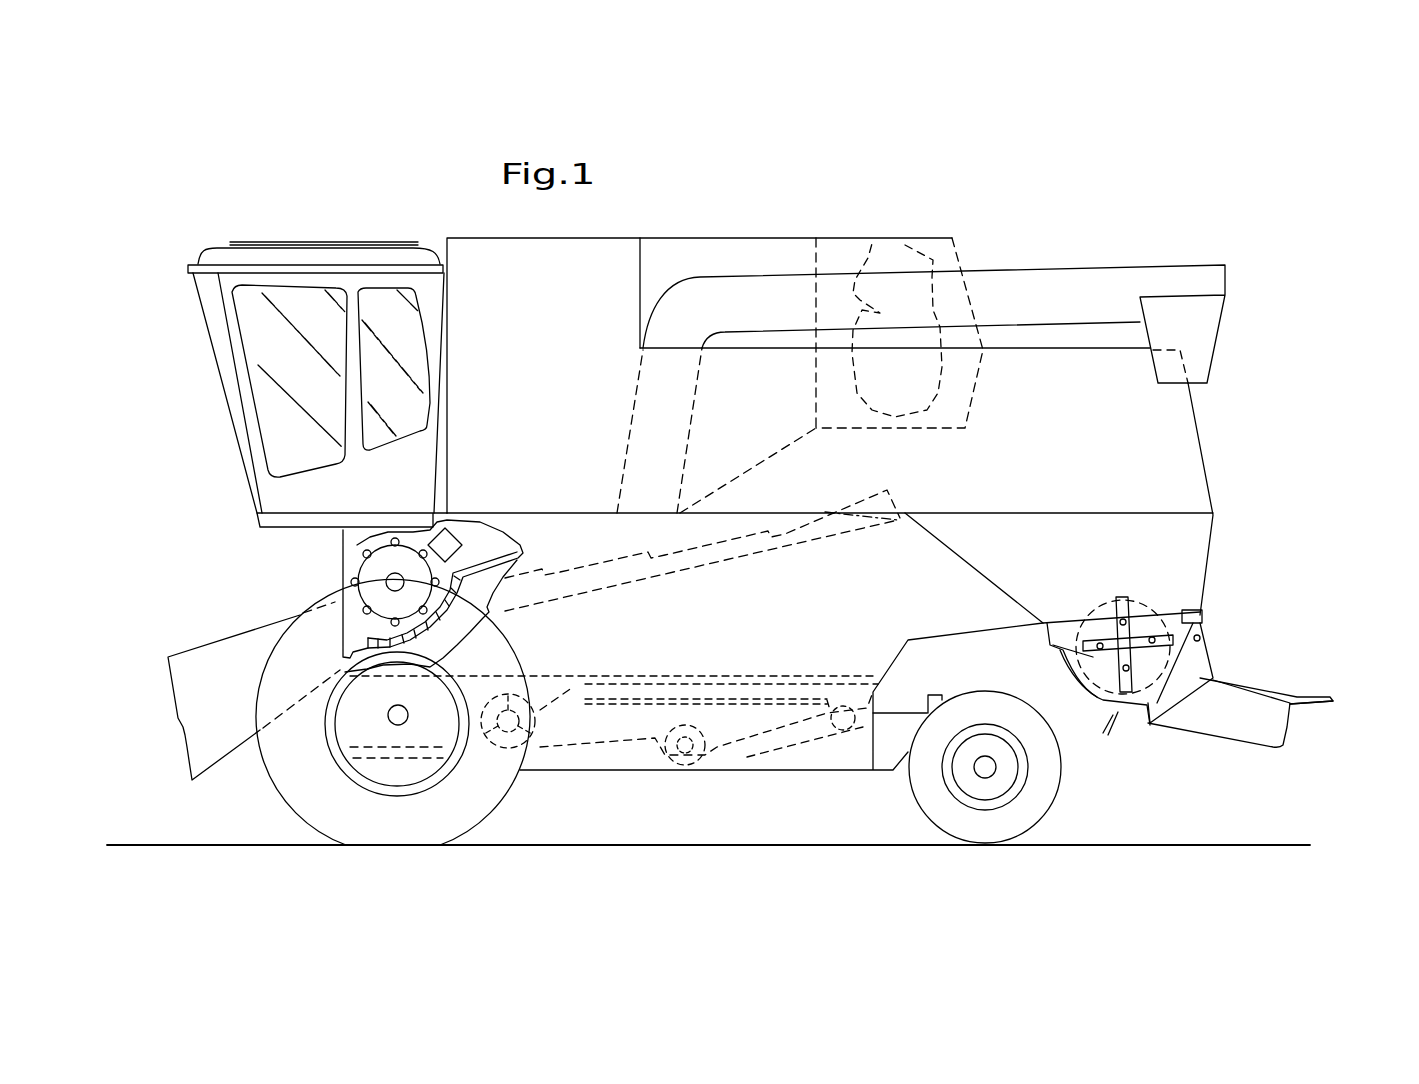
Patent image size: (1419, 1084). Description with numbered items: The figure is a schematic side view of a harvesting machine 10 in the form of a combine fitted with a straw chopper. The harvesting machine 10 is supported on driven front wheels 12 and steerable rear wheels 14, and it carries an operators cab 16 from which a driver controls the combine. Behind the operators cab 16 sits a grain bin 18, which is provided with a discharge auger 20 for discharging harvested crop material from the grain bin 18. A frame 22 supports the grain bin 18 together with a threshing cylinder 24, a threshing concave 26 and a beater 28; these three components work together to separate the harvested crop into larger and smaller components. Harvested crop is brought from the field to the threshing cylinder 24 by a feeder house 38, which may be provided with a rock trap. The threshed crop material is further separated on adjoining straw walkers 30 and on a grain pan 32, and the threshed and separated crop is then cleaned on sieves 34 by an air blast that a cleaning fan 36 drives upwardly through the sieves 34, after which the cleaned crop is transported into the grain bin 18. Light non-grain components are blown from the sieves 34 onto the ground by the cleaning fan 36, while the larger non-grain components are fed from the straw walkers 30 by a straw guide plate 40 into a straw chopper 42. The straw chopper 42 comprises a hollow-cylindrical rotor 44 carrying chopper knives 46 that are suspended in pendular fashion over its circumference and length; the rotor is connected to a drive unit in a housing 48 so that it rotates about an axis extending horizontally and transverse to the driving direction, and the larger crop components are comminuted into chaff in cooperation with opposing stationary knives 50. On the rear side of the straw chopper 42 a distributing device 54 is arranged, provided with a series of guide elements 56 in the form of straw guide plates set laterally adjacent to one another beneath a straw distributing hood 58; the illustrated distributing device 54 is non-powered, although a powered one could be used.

The harvesting machine 10 is at (783, 210).
The front wheels 12 is at (467, 822).
The rear wheels 14 is at (1038, 820).
The operators cab 16 is at (225, 363).
The grain bin 18 is at (560, 350).
The discharge auger 20 is at (1050, 287).
The frame 22 is at (838, 636).
The threshing cylinder 24 is at (373, 573).
The threshing concave 26 is at (350, 657).
The beater 28 is at (442, 517).
The straw walkers 30 is at (740, 550).
The grain pan 32 is at (553, 677).
The sieves 34 is at (725, 680).
The cleaning fan 36 is at (503, 745).
The feeder house 38 is at (212, 743).
The straw guide plate 40 is at (937, 557).
The straw chopper 42 is at (1149, 586).
The hollow-cylindrical rotor 44 is at (1203, 620).
The chopper knives 46 is at (1118, 607).
The housing 48 is at (1072, 677).
The stationary knives 50 is at (1055, 650).
The distributing device 54 is at (1290, 671).
The guide elements 56 is at (1265, 713).
The straw distributing hood 58 is at (1237, 680).